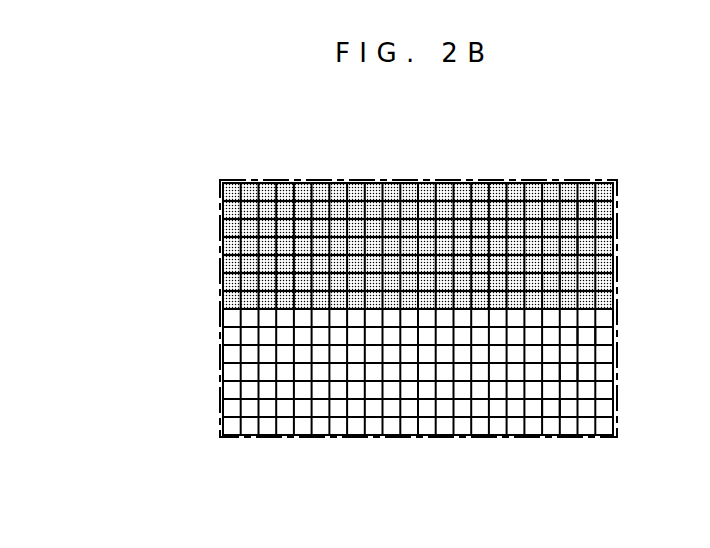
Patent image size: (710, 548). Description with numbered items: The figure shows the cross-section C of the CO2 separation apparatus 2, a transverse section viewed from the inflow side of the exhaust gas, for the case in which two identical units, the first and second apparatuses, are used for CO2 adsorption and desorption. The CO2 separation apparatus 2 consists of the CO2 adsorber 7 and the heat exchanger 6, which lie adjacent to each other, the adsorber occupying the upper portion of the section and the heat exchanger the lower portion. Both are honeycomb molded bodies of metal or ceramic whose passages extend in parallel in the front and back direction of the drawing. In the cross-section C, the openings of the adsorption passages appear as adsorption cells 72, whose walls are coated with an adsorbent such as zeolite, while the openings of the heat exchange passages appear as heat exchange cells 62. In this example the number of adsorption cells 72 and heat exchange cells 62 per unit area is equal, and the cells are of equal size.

The cross-section C is at (264, 182).
The CO2 separation apparatus 2 is at (506, 164).
The CO2 adsorber 7 is at (210, 245).
The heat exchanger 6 is at (210, 378).
The adsorption cell 72 is at (549, 279).
The heat exchange cell 62 is at (549, 407).